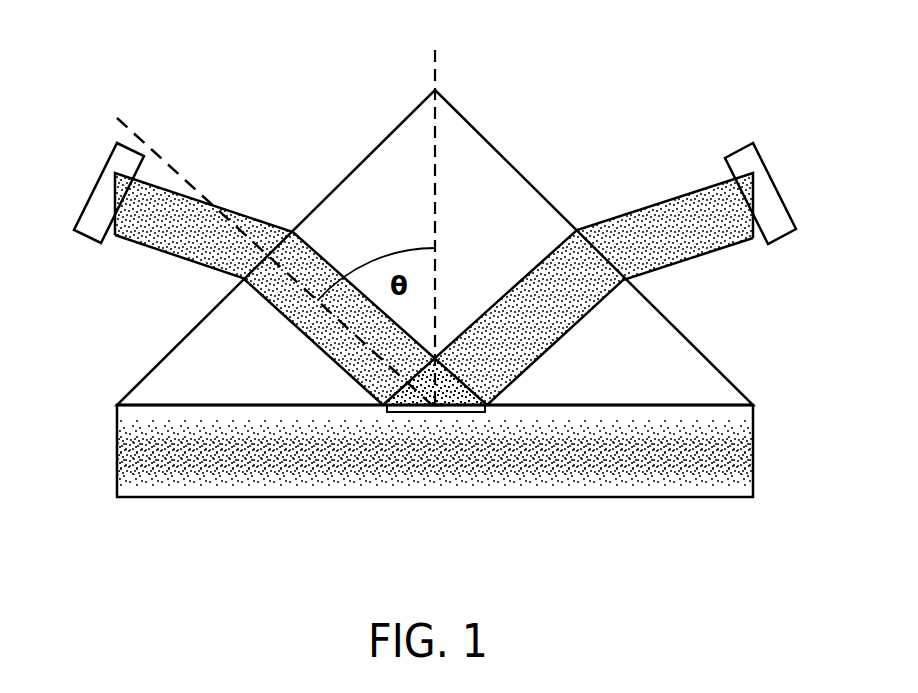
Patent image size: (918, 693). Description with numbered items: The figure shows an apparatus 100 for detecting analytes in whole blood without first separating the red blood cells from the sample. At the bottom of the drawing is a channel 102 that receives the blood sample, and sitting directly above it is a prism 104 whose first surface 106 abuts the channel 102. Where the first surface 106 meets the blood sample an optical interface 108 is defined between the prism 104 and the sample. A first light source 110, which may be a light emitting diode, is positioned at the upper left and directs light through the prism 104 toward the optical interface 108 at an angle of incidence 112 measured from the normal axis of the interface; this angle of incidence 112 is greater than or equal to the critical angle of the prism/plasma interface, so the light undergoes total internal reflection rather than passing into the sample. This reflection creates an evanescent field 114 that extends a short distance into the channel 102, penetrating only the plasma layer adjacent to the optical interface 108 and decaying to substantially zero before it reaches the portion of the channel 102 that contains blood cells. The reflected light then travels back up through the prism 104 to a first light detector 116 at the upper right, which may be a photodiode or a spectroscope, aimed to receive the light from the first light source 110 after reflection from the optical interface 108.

The apparatus 100 is at (332, 80).
The channel 102 is at (760, 405).
The prism 104 is at (510, 183).
The first surface 106 is at (178, 406).
The optical interface 108 is at (434, 411).
The first light source 110 is at (88, 203).
The angle of incidence 112 is at (422, 280).
The evanescent field 114 is at (490, 408).
The first light detector 116 is at (775, 206).